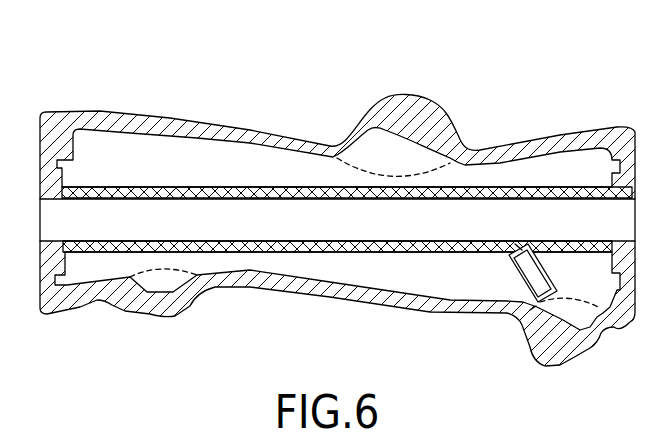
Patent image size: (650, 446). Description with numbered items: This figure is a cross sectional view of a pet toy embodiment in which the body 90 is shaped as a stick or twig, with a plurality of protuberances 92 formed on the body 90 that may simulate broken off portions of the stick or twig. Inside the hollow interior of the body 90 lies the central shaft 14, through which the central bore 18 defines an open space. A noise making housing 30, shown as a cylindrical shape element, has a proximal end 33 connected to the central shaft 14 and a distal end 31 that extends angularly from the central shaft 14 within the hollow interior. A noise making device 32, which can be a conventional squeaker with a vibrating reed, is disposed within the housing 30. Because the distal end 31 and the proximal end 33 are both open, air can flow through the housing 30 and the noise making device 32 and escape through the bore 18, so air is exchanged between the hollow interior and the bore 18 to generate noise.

The central shaft 14 is at (195, 186).
The central bore 18 is at (97, 231).
The noise making housing 30 is at (512, 280).
The distal end 31 is at (533, 312).
The noise making device 32 is at (542, 277).
The proximal end 33 is at (514, 242).
The body 90 is at (205, 121).
The protuberances 92 is at (432, 110).